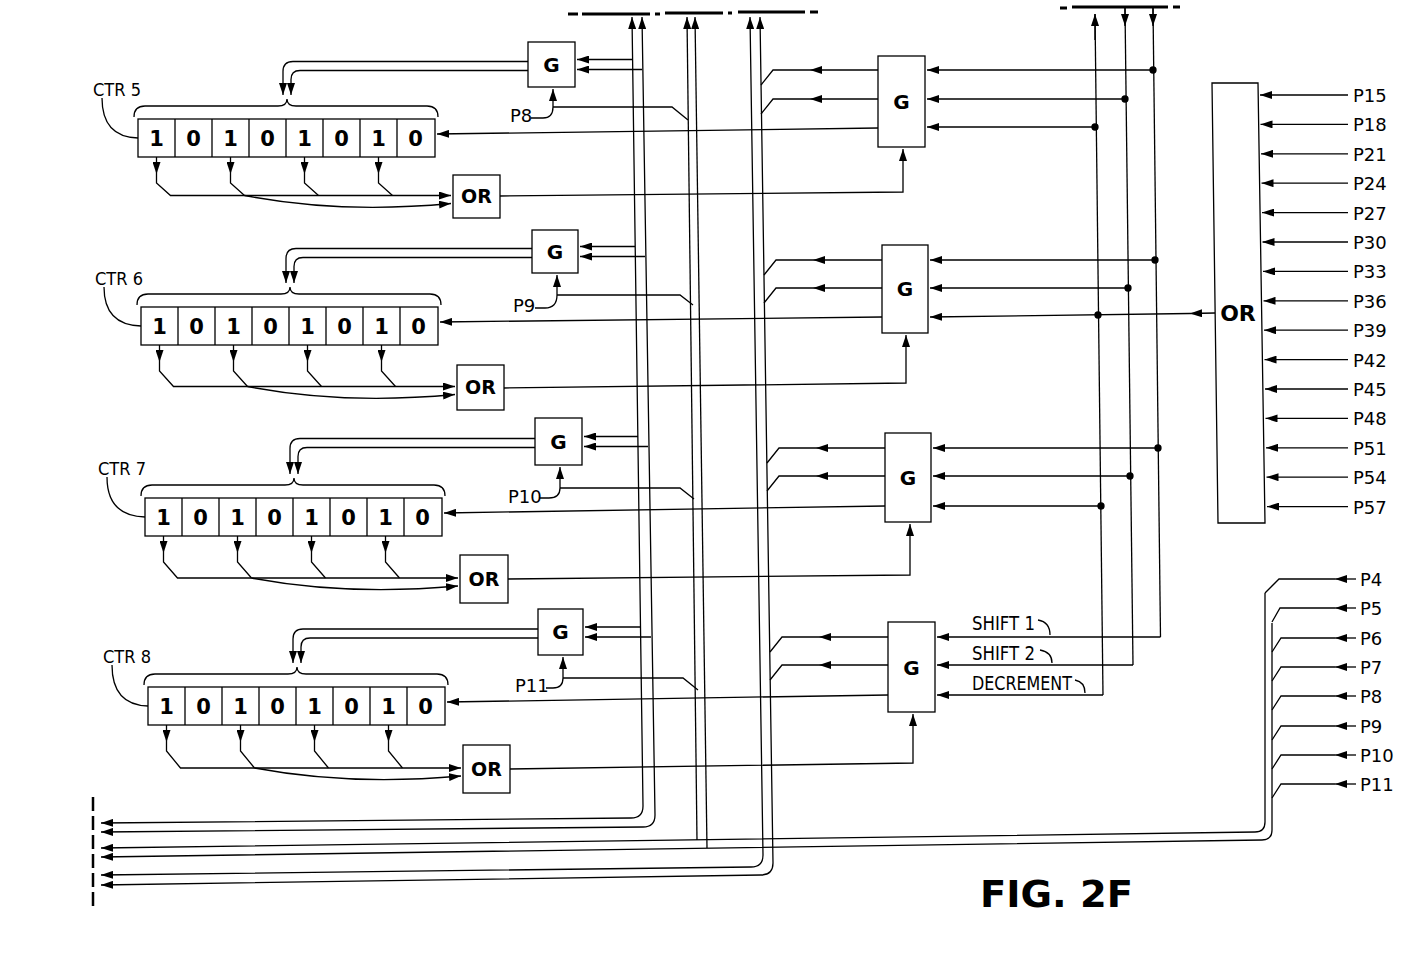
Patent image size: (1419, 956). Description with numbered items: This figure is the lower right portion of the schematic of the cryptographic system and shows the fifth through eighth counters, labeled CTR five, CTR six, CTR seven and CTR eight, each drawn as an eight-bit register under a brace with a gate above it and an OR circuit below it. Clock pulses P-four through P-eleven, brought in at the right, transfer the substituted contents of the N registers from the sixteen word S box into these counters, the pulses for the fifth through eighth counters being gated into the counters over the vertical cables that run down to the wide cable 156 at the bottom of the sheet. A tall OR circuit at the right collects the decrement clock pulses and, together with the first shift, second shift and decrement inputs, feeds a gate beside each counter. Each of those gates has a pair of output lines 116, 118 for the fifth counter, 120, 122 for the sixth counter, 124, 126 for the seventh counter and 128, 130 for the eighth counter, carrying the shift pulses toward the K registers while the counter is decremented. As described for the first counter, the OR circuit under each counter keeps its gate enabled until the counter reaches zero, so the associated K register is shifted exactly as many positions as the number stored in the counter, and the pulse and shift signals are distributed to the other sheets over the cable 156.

The first output line of gate G (counter 5) 116 is at (822, 71).
The second output line of gate G (counter 5) 118 is at (822, 100).
The first output line of gate G (counter 6) 120 is at (826, 260).
The second output line of gate G (counter 6) 122 is at (826, 288).
The first output line of gate G (counter 7) 124 is at (830, 448).
The second output line of gate G (counter 7) 126 is at (830, 476).
The first output line of gate G (counter 8) 128 is at (835, 637).
The second output line of gate G (counter 8) 130 is at (835, 665).
The bus cable 156 is at (228, 828).